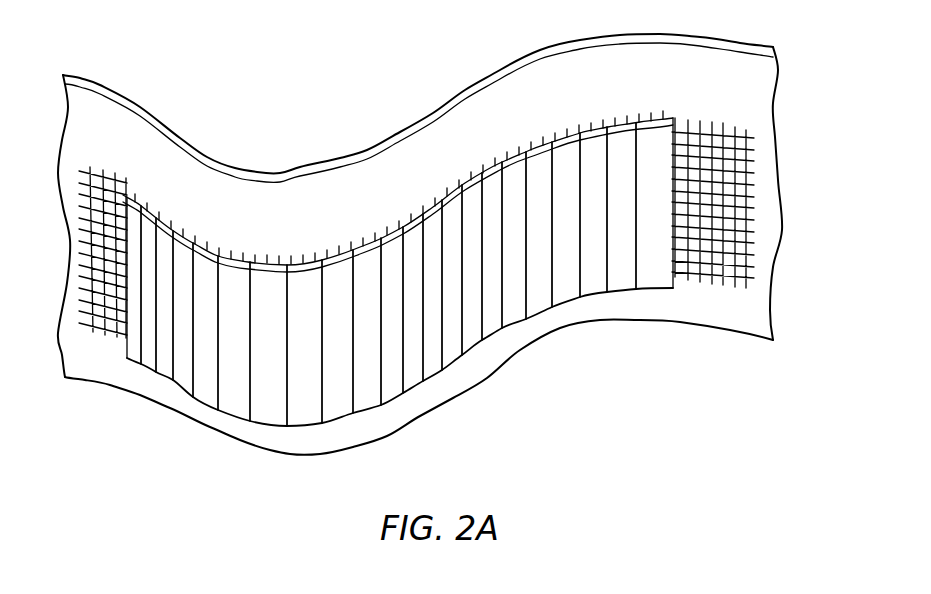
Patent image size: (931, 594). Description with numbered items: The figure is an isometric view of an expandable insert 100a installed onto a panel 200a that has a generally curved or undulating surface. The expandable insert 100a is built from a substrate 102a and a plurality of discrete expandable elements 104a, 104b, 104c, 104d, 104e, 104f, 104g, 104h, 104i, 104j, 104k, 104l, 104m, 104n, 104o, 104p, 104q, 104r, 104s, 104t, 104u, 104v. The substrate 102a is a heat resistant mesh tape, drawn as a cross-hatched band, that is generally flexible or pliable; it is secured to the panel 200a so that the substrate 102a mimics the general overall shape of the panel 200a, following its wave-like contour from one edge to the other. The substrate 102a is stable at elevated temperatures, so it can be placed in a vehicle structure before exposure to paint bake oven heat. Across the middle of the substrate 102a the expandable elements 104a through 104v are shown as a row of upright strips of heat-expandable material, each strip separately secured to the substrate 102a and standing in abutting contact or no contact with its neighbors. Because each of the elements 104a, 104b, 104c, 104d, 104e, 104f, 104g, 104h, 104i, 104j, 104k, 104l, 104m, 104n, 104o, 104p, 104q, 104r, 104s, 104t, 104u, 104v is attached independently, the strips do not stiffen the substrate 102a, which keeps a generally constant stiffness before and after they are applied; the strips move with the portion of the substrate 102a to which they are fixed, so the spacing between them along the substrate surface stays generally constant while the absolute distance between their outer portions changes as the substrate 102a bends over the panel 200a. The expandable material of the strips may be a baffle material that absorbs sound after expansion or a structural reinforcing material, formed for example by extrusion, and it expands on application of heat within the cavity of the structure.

The panel 200a is at (752, 88).
The expandable insert 100a is at (782, 133).
The substrate 102a is at (95, 343).
The expandable element 104a is at (140, 352).
The expandable element 104b is at (156, 359).
The expandable element 104c is at (169, 370).
The expandable element 104d is at (187, 385).
The expandable element 104e is at (207, 263).
The expandable element 104f is at (225, 286).
The expandable element 104g is at (278, 295).
The expandable element 104h is at (303, 295).
The expandable element 104i is at (345, 403).
The expandable element 104j is at (374, 394).
The expandable element 104k is at (397, 384).
The expandable element 104l is at (421, 371).
The expandable element 104m is at (421, 238).
The expandable element 104n is at (452, 213).
The expandable element 104o is at (473, 213).
The expandable element 104p is at (510, 337).
The expandable element 104q is at (512, 312).
The expandable element 104r is at (539, 303).
The expandable element 104s is at (560, 158).
The expandable element 104t is at (592, 155).
The expandable element 104u is at (625, 274).
The expandable element 104v is at (655, 265).